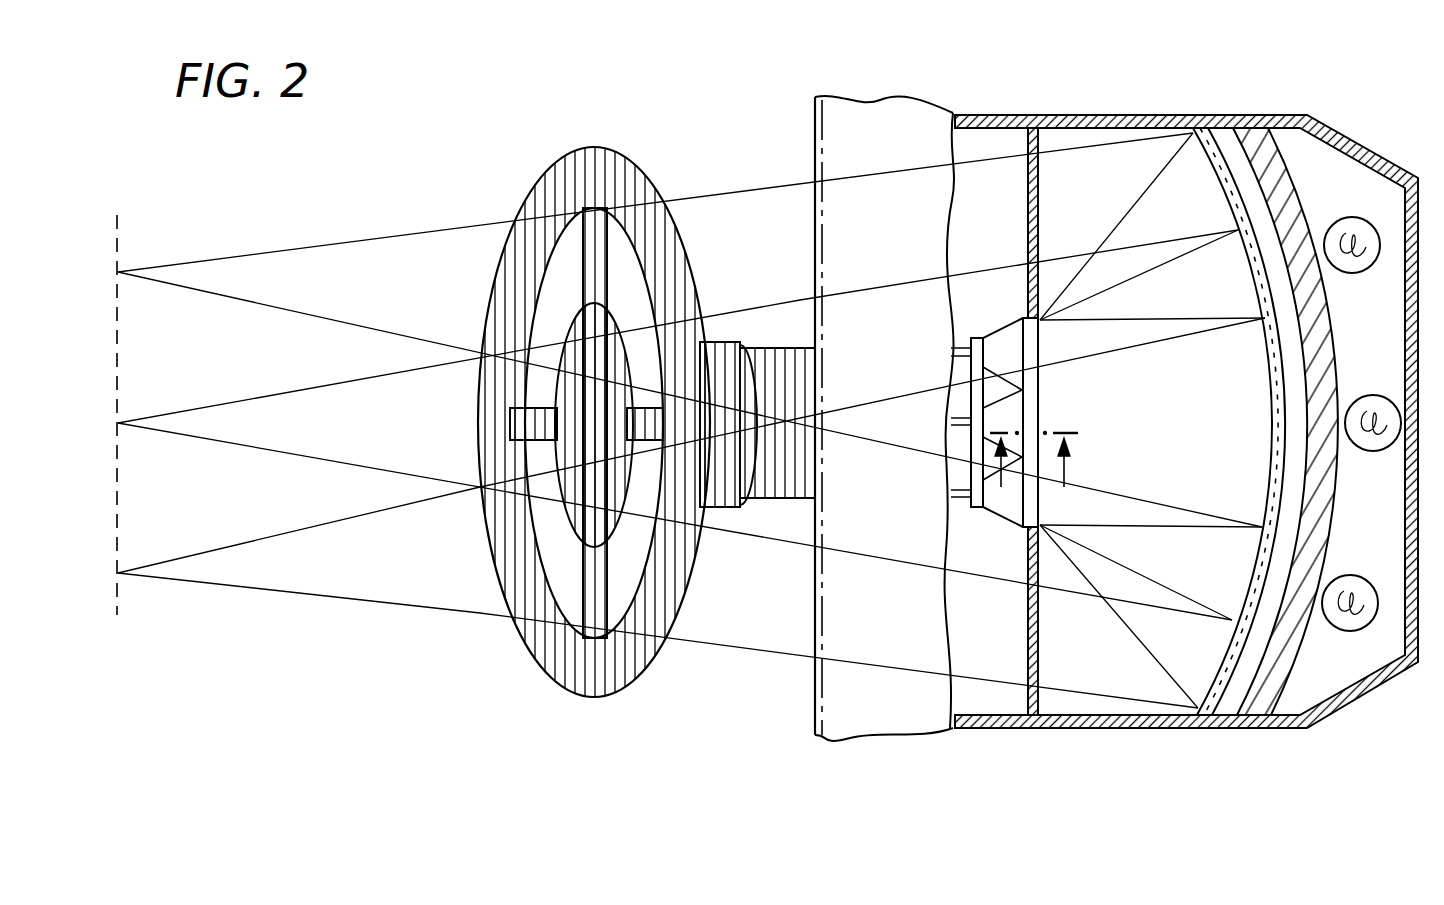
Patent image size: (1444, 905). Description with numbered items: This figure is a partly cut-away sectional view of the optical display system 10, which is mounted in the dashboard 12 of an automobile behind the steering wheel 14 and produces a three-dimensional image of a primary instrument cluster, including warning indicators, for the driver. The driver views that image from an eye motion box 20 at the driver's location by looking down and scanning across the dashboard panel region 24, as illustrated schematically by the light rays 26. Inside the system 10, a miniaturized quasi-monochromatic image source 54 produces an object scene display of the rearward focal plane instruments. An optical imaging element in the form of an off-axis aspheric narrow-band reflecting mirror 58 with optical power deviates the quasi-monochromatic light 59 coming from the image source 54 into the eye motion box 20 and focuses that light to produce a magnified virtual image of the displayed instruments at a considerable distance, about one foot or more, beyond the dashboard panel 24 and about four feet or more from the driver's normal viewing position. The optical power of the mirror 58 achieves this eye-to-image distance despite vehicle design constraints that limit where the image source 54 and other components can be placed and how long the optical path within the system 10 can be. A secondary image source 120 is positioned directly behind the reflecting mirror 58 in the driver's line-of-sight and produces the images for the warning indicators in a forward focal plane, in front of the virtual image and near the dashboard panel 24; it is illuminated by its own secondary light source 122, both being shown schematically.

The optical display system 10 is at (1194, 658).
The dashboard 12 is at (1116, 388).
The steering wheel 14 is at (605, 147).
The eye motion box 20 is at (117, 600).
The dashboard panel region 24 is at (1088, 198).
The light rays 26 is at (365, 605).
The quasi-monochromatic image source 54 is at (996, 315).
The off-axis aspheric narrow-band reflecting mirror 58 is at (1227, 693).
The quasi-monochromatic light 59 is at (1141, 525).
The secondary image source 120 is at (1328, 549).
The secondary light source 122 is at (1340, 272).